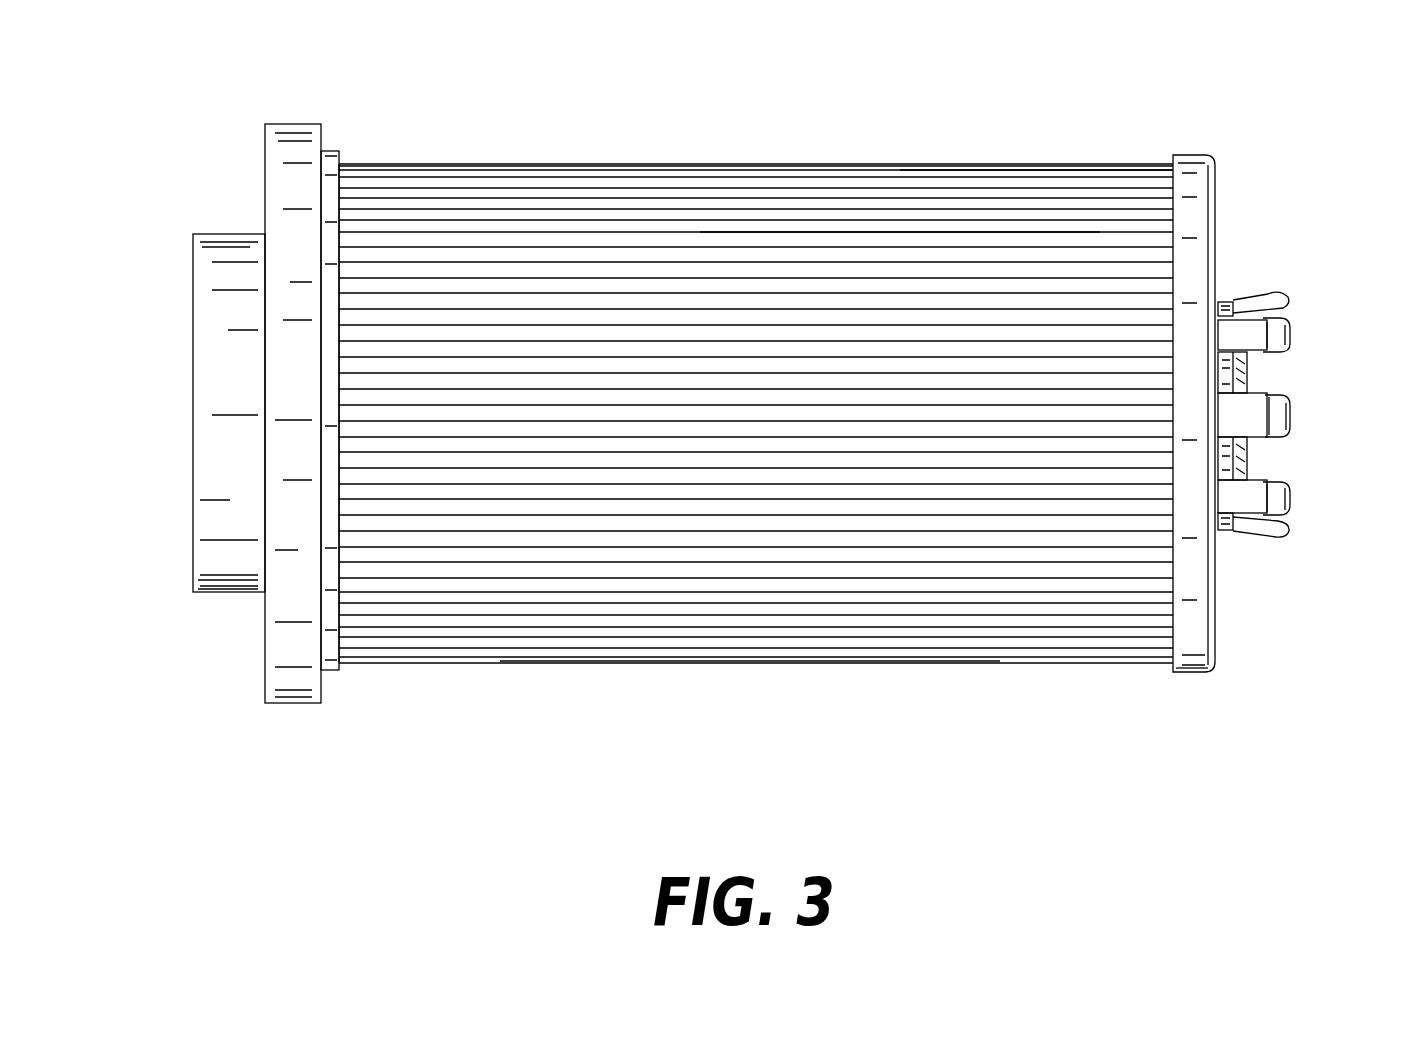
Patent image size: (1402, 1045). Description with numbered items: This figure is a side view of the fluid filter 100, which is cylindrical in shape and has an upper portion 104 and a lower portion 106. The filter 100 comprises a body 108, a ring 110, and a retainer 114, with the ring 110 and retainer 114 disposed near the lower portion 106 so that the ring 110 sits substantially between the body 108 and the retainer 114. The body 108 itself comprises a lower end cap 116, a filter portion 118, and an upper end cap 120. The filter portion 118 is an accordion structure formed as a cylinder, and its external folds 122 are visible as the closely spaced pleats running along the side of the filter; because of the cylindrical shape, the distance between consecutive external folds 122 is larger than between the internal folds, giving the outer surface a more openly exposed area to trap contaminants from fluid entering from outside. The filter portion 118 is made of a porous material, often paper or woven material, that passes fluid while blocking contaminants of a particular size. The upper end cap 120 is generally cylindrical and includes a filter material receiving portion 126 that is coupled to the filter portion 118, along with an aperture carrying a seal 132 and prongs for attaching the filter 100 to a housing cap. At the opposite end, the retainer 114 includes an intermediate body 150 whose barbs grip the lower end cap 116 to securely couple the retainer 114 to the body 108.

The filter 100 is at (775, 427).
The upper portion 104 is at (1078, 163).
The lower portion 106 is at (381, 162).
The body 108 is at (733, 143).
The ring 110 is at (290, 124).
The retainer 114 is at (220, 234).
The lower end cap 116 is at (298, 704).
The filter portion 118 is at (757, 664).
The upper end cap 120 is at (1200, 672).
The external folds 122 is at (913, 235).
The filter material receiving portion 126 is at (1200, 155).
The seal 132 is at (1250, 378).
The intermediate body 150 is at (222, 583).